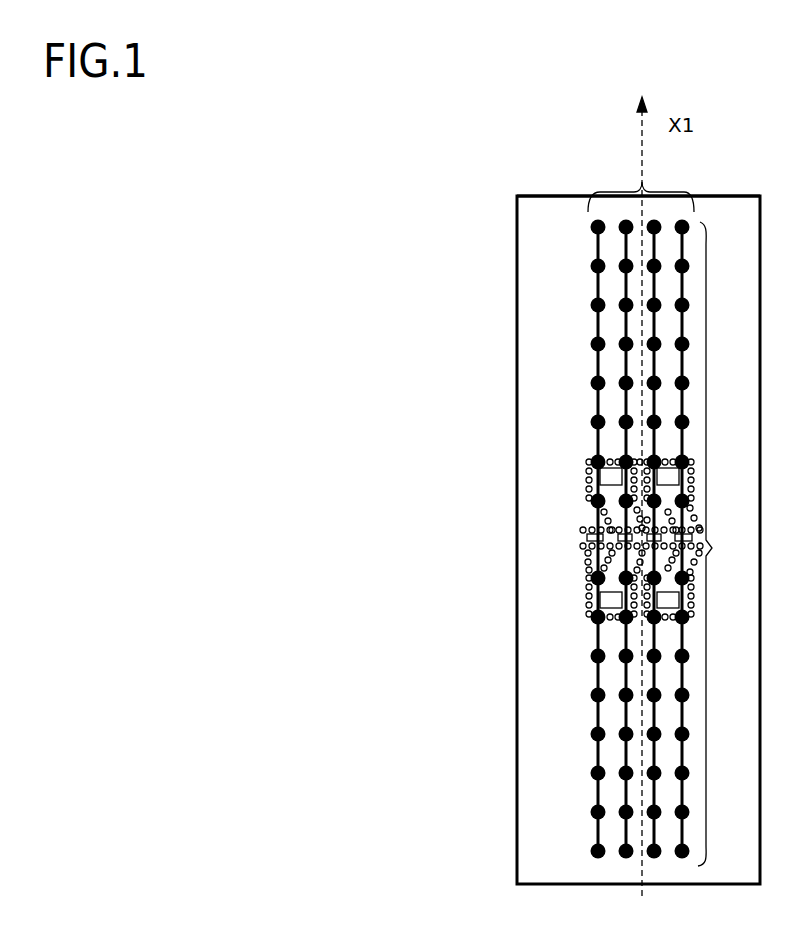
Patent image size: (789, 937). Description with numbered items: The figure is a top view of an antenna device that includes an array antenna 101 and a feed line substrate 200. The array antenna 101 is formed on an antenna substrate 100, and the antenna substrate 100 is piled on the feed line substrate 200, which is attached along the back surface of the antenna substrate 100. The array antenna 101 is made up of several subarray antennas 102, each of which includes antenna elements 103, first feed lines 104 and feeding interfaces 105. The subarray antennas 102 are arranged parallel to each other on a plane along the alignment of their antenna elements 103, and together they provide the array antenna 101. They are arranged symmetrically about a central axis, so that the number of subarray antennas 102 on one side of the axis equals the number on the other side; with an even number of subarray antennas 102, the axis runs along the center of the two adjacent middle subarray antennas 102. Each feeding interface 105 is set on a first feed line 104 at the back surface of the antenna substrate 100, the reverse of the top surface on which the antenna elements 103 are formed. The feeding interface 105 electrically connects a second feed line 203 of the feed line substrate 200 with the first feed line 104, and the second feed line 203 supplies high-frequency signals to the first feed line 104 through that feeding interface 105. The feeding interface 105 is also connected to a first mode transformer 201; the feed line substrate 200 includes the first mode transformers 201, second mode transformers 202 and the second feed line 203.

The antenna substrate 100 is at (724, 196).
The array antenna 101 is at (675, 500).
The subarray antenna 102 is at (642, 544).
The antenna element 103 is at (686, 346).
The first feed line 104 is at (684, 285).
The feeding interface 105 is at (608, 521).
The feed line substrate 200 is at (551, 196).
The first mode transformer 201 is at (585, 538).
The second mode transformer 202 is at (670, 476).
The second feed line 203 is at (588, 568).